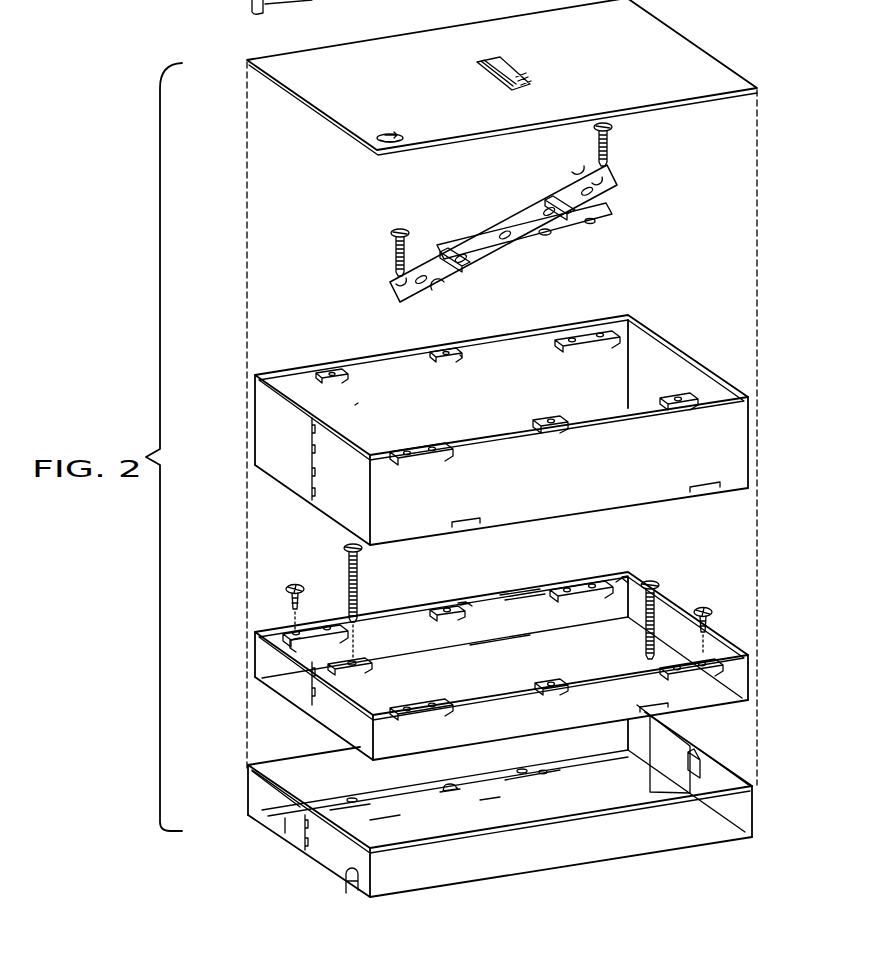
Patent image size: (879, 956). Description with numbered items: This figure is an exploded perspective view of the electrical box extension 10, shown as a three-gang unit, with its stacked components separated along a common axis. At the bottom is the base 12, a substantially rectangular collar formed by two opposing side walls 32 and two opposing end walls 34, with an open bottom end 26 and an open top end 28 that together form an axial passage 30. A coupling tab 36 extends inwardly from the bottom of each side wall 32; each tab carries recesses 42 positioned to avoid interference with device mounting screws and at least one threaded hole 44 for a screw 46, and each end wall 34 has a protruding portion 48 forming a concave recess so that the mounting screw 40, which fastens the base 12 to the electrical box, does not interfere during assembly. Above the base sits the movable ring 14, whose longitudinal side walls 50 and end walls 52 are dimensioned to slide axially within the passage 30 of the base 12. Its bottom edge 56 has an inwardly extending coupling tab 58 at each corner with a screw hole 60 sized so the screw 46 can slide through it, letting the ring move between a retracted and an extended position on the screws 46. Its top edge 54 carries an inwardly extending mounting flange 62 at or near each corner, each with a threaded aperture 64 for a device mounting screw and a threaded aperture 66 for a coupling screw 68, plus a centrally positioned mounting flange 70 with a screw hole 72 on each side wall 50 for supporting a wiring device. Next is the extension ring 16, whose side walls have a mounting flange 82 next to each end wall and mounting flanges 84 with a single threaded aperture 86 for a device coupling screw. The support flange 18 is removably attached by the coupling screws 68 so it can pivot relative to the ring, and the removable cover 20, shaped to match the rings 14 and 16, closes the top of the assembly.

The electrical box extension 10 is at (242, 332).
The base 12 is at (753, 826).
The movable ring 14 is at (752, 672).
The extension ring 16 is at (752, 437).
The support flange 18 is at (470, 214).
The removable cover 20 is at (697, 41).
The open bottom end 26 is at (666, 785).
The open top end 28 is at (735, 765).
The axial passage 30 is at (385, 820).
The side wall 32 is at (286, 768).
The end wall 34 is at (702, 760).
The coupling tab 36 is at (490, 810).
The mounting screw 40 is at (286, 589).
The recess 42 is at (451, 788).
The threaded hole 44 is at (276, 803).
The screw 46 is at (345, 560).
The protruding portion 48 is at (340, 893).
The side wall 50 is at (533, 612).
The end wall 52 is at (678, 612).
The top edge 54 is at (508, 590).
The bottom edge 56 is at (500, 643).
The coupling tab 58 is at (370, 661).
The screw hole 60 is at (352, 660).
The mounting flange 62 is at (292, 648).
The threaded aperture 64 is at (326, 626).
The threaded aperture 66 is at (288, 634).
The coupling screw 68 is at (393, 258).
The mounting flange 70 is at (466, 603).
The screw hole 72 is at (450, 607).
The mounting flange 82 is at (602, 341).
The mounting flange 84 is at (682, 397).
The threaded aperture 86 is at (328, 370).